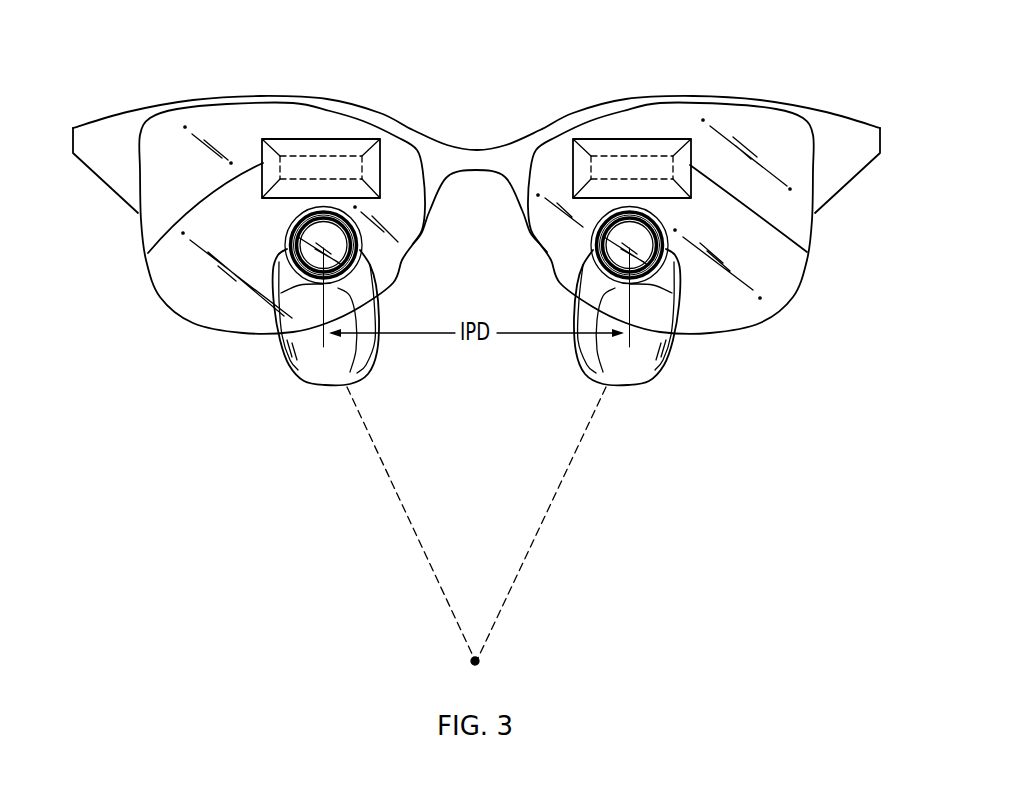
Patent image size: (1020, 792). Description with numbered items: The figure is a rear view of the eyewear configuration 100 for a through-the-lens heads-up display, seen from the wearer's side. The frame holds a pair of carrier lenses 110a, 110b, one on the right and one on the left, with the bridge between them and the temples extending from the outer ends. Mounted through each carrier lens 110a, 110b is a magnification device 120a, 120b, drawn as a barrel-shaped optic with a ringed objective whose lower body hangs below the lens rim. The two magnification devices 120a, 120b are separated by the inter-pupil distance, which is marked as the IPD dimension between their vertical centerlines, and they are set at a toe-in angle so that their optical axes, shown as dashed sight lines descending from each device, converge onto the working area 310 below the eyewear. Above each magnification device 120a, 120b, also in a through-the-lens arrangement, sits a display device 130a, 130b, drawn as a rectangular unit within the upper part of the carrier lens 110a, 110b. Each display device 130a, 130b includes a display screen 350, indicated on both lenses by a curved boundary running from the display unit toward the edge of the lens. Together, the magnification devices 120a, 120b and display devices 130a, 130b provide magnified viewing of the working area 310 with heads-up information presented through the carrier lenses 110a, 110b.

The eyewear device 100 is at (107, 137).
The carrier lens 110a is at (728, 303).
The carrier lens 110b is at (217, 297).
The magnification device 120a is at (635, 386).
The magnification device 120b is at (318, 386).
The display device 130a is at (633, 150).
The display device 130b is at (300, 152).
The display screen 350 is at (152, 253).
The working area 310 is at (480, 661).